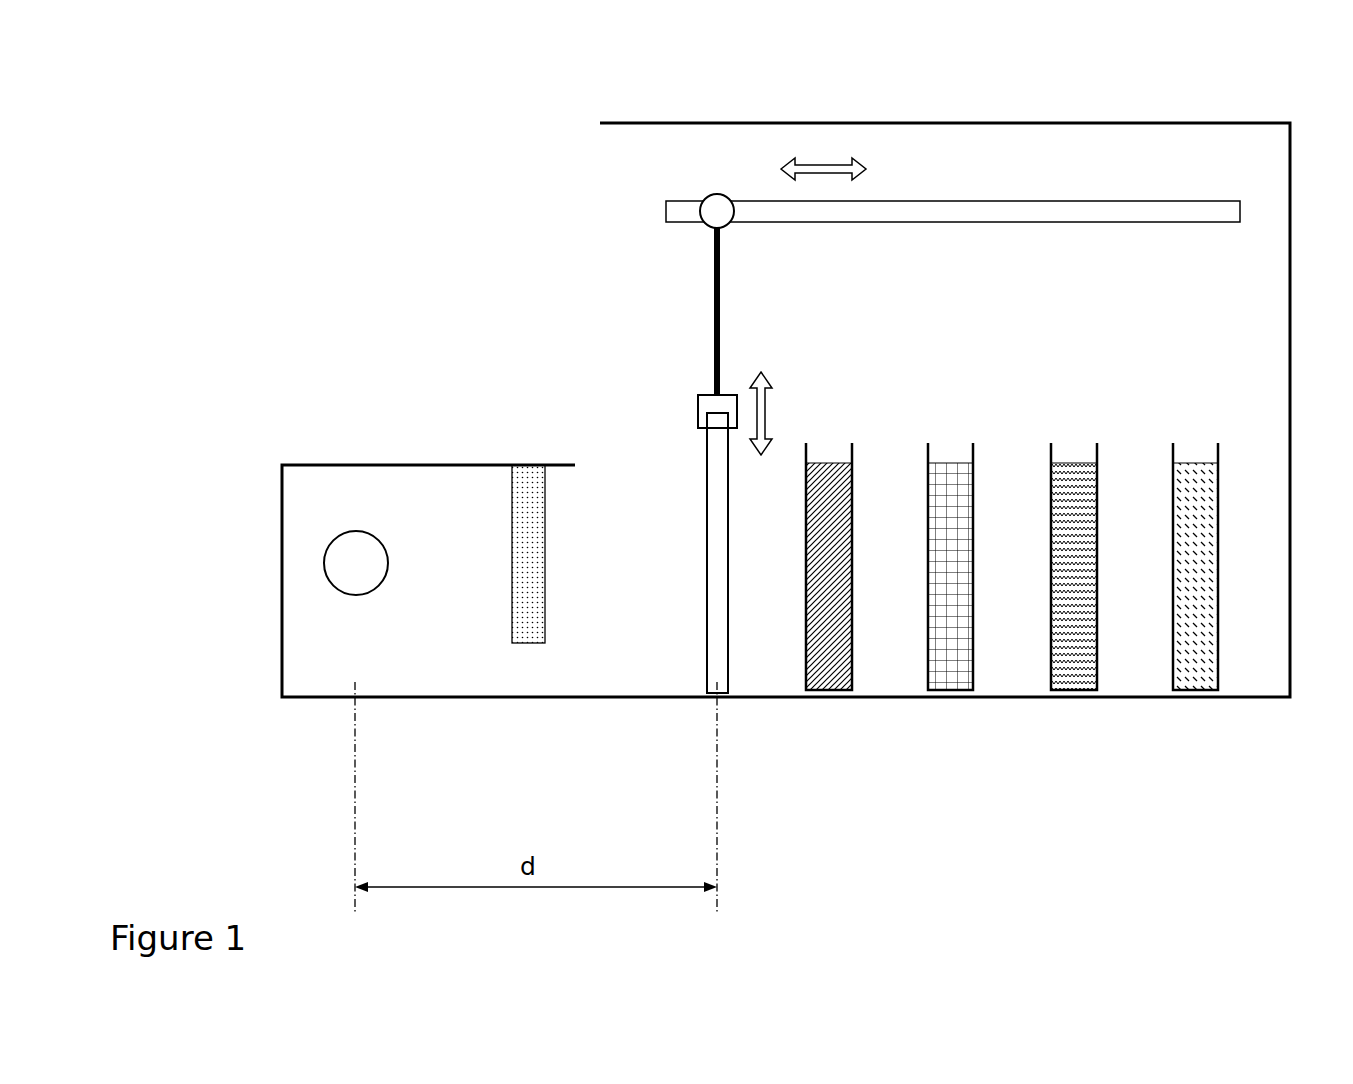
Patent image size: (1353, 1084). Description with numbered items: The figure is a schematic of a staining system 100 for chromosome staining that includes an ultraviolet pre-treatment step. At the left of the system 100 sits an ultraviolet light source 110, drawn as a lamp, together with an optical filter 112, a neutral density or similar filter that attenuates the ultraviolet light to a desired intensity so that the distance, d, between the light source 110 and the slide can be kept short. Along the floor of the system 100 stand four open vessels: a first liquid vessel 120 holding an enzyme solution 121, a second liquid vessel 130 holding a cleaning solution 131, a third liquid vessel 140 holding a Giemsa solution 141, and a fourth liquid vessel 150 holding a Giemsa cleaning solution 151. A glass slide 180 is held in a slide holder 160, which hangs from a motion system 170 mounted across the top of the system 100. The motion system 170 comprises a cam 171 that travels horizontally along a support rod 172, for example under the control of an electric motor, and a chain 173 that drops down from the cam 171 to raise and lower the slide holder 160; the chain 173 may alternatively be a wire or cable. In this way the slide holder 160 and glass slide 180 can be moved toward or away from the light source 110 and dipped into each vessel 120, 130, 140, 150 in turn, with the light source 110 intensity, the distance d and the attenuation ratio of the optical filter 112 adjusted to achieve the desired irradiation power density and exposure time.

The staining system 100 is at (284, 156).
The ultraviolet light source 110 is at (362, 518).
The optical filter 112 is at (525, 645).
The first liquid vessel 120 is at (844, 594).
The enzyme solution 121 is at (836, 485).
The second liquid vessel 130 is at (962, 594).
The cleaning solution 131 is at (960, 485).
The third liquid vessel 140 is at (1088, 594).
The Giemsa solution 141 is at (1085, 485).
The fourth liquid vessel 150 is at (1210, 594).
The Giemsa cleaning solution 151 is at (1203, 485).
The slide holder 160 is at (690, 380).
The motion system 170 is at (596, 224).
The cam 171 is at (738, 192).
The support rod 172 is at (975, 192).
The chain 173 is at (703, 283).
The glass slide 180 is at (698, 467).